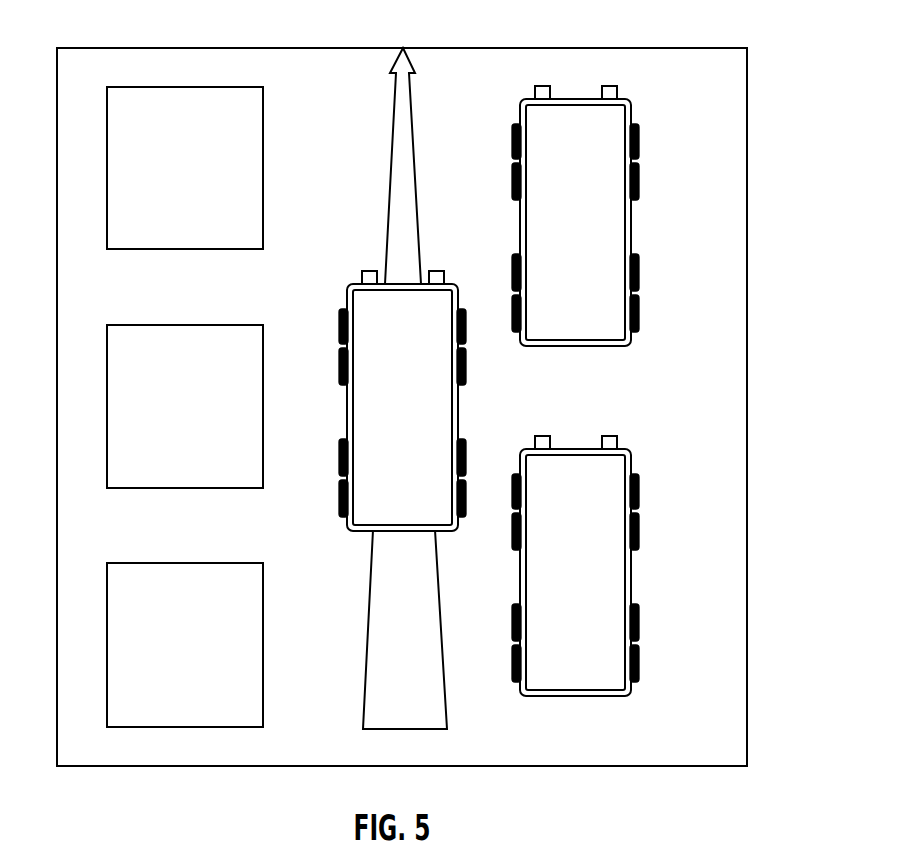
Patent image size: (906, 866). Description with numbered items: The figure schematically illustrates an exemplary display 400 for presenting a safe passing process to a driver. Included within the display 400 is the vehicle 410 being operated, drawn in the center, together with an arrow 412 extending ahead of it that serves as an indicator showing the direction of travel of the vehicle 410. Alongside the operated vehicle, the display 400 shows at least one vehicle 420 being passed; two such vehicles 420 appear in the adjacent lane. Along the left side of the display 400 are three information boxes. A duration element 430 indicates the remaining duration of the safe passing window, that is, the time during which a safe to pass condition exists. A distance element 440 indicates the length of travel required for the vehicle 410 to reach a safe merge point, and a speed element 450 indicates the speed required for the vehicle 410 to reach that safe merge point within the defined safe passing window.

The display 400 is at (697, 47).
The vehicle being operated 410 is at (382, 421).
The arrow 412 is at (400, 195).
The vehicle being passed 420 is at (633, 222).
The duration element 430 is at (214, 87).
The distance element 440 is at (214, 325).
The speed element 450 is at (214, 563).